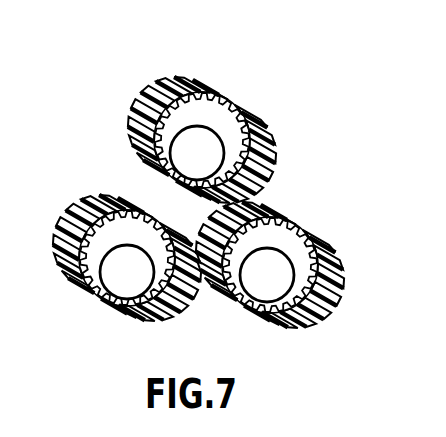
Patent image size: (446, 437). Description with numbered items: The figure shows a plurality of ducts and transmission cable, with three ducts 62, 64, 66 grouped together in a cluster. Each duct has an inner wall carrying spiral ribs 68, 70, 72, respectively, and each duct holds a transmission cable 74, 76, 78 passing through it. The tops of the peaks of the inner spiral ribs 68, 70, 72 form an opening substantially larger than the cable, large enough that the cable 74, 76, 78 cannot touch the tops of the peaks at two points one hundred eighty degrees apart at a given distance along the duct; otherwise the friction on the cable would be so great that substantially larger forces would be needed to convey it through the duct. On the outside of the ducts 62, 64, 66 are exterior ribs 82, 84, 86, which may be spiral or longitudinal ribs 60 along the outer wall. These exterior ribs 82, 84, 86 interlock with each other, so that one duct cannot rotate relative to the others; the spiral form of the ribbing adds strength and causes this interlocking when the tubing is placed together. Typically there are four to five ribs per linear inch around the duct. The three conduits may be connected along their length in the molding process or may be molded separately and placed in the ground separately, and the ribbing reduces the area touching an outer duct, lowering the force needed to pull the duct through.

The longitudinal ribs 60 is at (299, 258).
The duct 62 is at (209, 106).
The duct 64 is at (103, 265).
The duct 66 is at (330, 283).
The spiral ribs 68 is at (130, 120).
The spiral ribs 70 is at (87, 308).
The spiral ribs 72 is at (325, 222).
The transmission cable 74 is at (200, 147).
The transmission cable 76 is at (122, 273).
The transmission cable 78 is at (270, 280).
The exterior ribs 82 is at (265, 118).
The exterior ribs 84 is at (73, 215).
The exterior ribs 86 is at (268, 333).